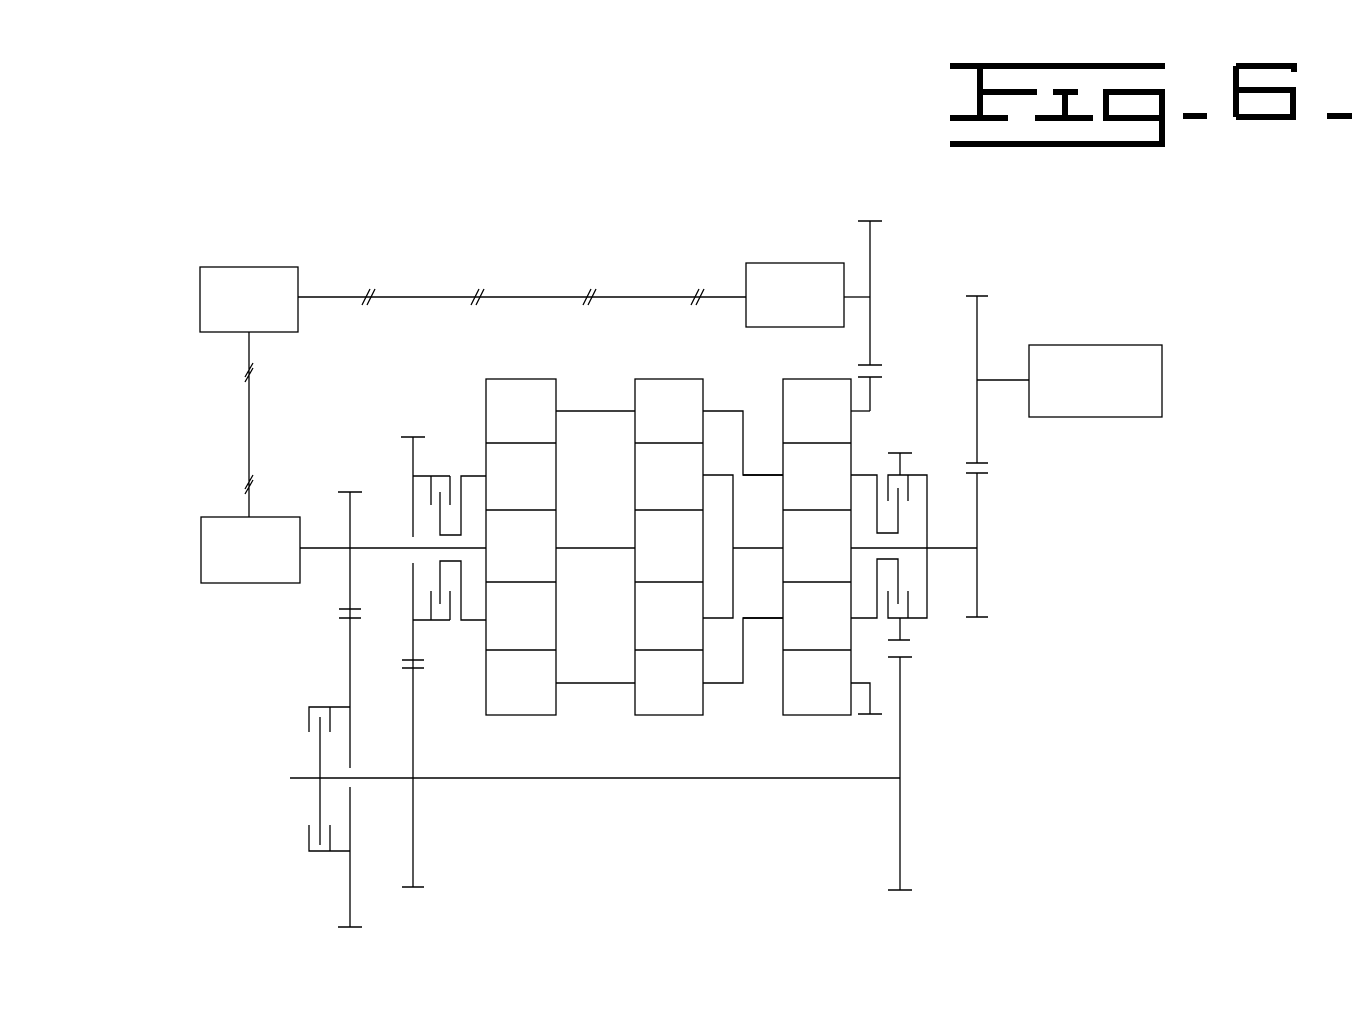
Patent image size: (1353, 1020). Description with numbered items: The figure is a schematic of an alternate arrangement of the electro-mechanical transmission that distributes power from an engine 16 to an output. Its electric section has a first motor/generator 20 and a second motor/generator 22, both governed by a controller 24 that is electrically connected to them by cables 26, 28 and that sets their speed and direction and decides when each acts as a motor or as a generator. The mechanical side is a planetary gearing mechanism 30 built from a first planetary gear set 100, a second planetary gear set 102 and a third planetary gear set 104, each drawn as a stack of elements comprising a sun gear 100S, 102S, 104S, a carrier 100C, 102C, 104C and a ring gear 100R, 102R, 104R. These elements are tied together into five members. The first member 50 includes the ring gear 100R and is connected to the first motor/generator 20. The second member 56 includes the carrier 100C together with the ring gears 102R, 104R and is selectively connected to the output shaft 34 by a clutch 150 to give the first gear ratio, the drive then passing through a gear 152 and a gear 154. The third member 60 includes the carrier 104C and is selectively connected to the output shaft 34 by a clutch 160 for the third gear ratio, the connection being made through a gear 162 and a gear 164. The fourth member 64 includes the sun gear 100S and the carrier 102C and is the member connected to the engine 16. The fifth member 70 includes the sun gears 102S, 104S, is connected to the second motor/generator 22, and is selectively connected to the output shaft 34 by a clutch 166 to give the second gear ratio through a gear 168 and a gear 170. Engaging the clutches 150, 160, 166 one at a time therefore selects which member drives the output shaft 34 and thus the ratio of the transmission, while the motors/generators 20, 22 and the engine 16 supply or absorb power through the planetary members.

The engine 16 is at (1105, 345).
The first motor/generator 20 is at (770, 263).
The second motor/generator 22 is at (201, 549).
The controller 24 is at (200, 298).
The cable 26 is at (398, 297).
The cable 28 is at (249, 428).
The planetary gearing mechanism 30 is at (420, 362).
The output shaft 34 is at (668, 779).
The first member 50 is at (870, 410).
The second member 56 is at (858, 474).
The third member 60 is at (472, 476).
The fourth member 64 is at (977, 538).
The fifth member 70 is at (397, 548).
The first planetary gear set 100 is at (842, 355).
The ring gear 100R is at (818, 378).
The carrier 100C is at (782, 488).
The sun gear 100S is at (782, 565).
The second planetary gear set 102 is at (654, 356).
The ring gear 102R is at (690, 379).
The carrier 102C is at (634, 496).
The sun gear 102S is at (634, 540).
The third planetary gear set 104 is at (514, 356).
The ring gear 104R is at (535, 379).
The carrier 104C is at (558, 450).
The sun gear 104S is at (558, 562).
The clutch 150 is at (895, 622).
The gear 152 is at (912, 453).
The gear 154 is at (900, 763).
The clutch 160 is at (432, 620).
The gear 162 is at (413, 455).
The gear 164 is at (413, 733).
The clutch 166 is at (320, 851).
The gear 168 is at (348, 590).
The gear 170 is at (350, 903).